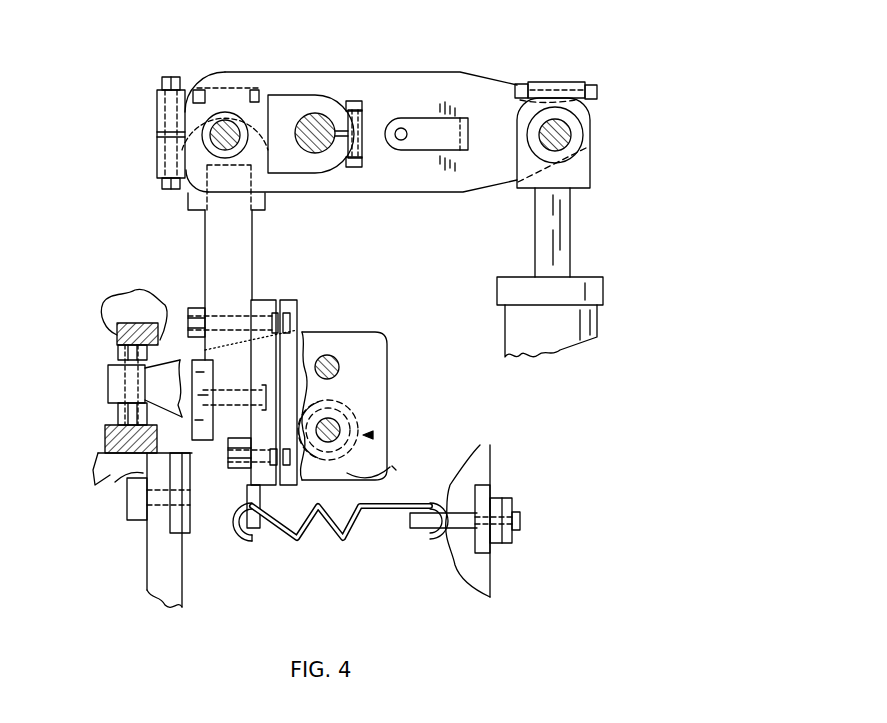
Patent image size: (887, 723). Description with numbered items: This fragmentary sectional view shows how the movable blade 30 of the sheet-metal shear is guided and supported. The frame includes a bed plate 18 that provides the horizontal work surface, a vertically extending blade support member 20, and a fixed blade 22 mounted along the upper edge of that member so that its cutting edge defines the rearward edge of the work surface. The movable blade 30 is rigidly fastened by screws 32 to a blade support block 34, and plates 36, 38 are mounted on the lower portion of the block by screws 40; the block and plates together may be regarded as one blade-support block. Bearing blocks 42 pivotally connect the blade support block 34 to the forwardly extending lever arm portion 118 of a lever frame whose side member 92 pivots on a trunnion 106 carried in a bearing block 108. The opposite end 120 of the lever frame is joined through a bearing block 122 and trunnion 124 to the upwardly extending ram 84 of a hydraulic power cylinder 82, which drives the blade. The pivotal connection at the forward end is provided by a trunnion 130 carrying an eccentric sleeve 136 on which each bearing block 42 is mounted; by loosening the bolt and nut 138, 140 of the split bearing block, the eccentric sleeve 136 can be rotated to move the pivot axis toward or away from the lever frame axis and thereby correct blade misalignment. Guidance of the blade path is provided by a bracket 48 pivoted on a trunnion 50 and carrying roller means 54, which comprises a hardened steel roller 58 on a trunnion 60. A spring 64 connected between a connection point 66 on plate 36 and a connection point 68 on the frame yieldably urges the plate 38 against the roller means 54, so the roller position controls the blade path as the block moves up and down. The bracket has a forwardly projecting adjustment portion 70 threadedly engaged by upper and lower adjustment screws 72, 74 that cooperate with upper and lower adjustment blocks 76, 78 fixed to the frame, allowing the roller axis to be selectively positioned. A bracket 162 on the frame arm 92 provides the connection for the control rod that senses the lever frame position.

The bed plate 18 is at (108, 483).
The blade support member 20 is at (160, 553).
The fixed blade 22 is at (190, 475).
The movable blade 30 is at (197, 378).
The screws 32 is at (222, 390).
The blade support block 34 is at (242, 270).
The plate 36 is at (263, 305).
The plate 38 is at (290, 312).
The screws 40 is at (238, 315).
The bearing blocks 42 is at (193, 200).
The bracket 48 is at (373, 377).
The trunnion 50 is at (340, 365).
The roller means 54 is at (373, 435).
The hardened steel roller 58 is at (396, 472).
The trunnion 60 is at (340, 423).
The spring 64 is at (352, 522).
The connection point 66 is at (258, 517).
The connection point 68 is at (482, 493).
The adjustment portion 70 is at (115, 388).
The upper adjustment screw 72 is at (122, 360).
The lower adjustment screw 74 is at (120, 407).
The upper adjustment block 76 is at (118, 342).
The lower adjustment block 78 is at (107, 432).
The hydraulic power cylinder 82 is at (542, 332).
The ram 84 is at (570, 252).
The side member 92 is at (393, 87).
The trunnion 106 is at (315, 153).
The bearing block 108 is at (280, 115).
The lever arm portion 118 is at (243, 78).
The lever frame end 120 is at (490, 92).
The bearing block 122 is at (580, 180).
The trunnion 124 is at (572, 135).
The trunnion 130 is at (240, 147).
The eccentric sleeve 136 is at (212, 145).
The bolt 138 is at (195, 88).
The nut 140 is at (260, 85).
The bracket 162 is at (422, 135).